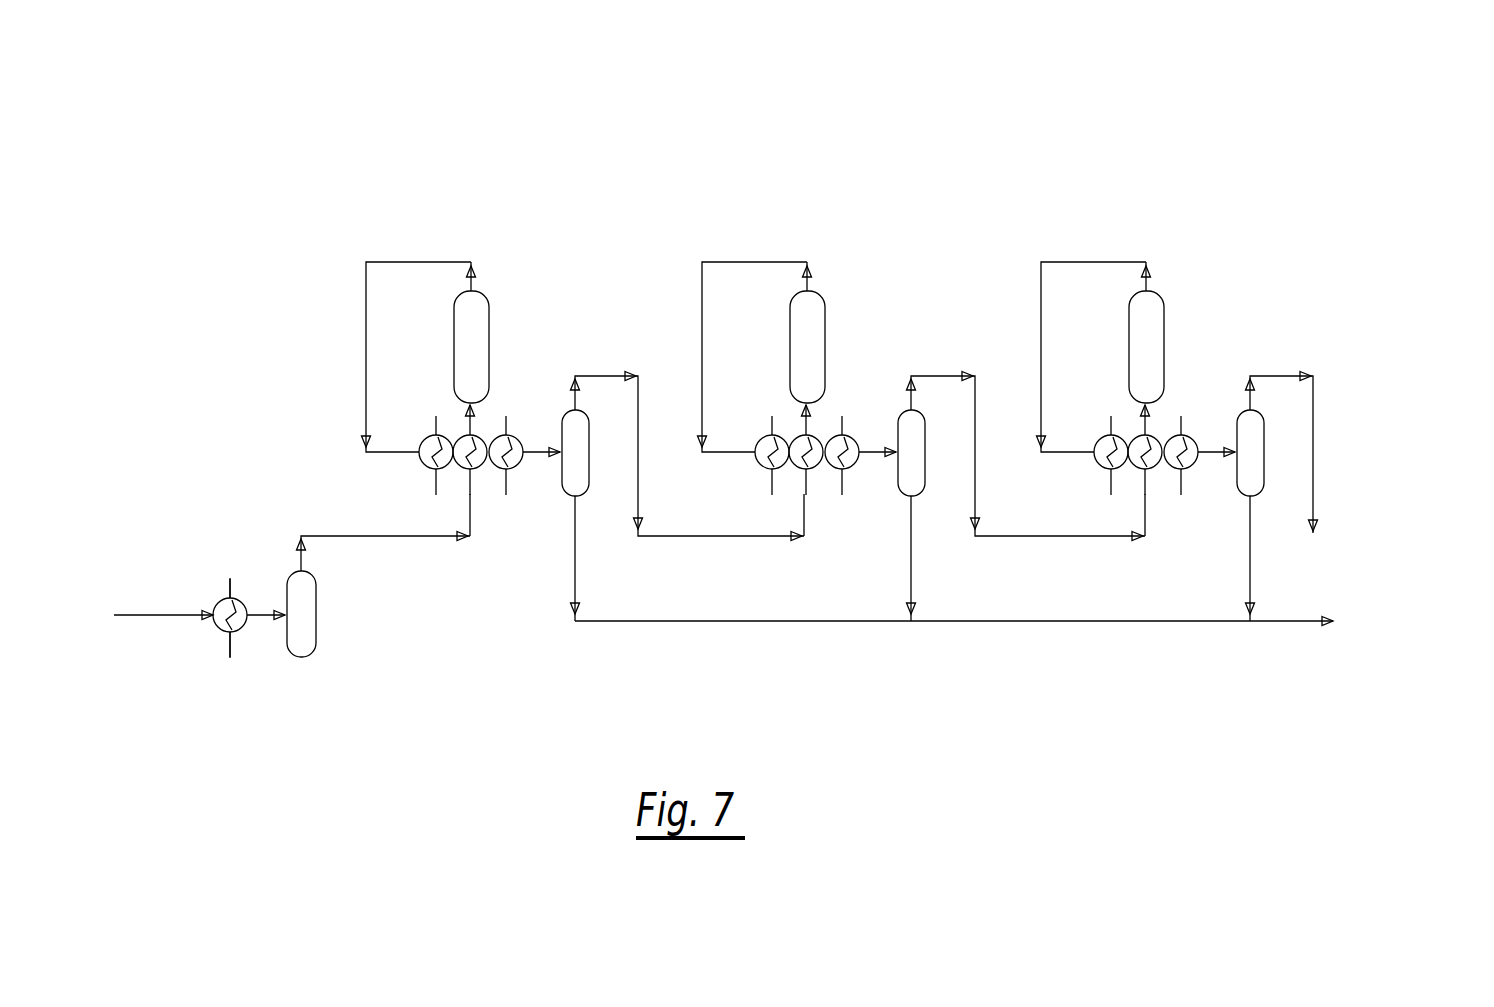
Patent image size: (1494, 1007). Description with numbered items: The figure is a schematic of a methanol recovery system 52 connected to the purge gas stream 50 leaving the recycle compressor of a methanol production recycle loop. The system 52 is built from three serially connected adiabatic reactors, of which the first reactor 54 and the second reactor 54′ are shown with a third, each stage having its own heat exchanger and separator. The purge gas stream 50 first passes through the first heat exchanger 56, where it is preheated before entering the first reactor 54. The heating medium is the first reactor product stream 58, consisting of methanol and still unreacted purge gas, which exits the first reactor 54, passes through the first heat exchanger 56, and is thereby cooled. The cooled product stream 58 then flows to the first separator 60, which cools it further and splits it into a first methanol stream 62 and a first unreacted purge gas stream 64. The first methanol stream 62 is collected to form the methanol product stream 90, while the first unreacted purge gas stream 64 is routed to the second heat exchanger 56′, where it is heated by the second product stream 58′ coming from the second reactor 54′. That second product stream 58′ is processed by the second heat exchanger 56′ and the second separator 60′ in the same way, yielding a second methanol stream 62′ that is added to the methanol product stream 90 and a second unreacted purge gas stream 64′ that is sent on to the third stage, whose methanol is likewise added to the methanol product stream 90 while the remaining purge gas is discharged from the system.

The purge gas stream 50 is at (383, 545).
The methanol recovery system 52 is at (910, 143).
The first reactor 54 is at (500, 312).
The second reactor 54′ is at (832, 315).
The first heat exchanger 56 is at (504, 408).
The second heat exchanger 56′ is at (825, 450).
The first reactor product stream 58 is at (366, 338).
The second product stream 58′ is at (703, 330).
The first separator 60 is at (560, 474).
The second separator 60′ is at (894, 471).
The first methanol stream 62 is at (573, 572).
The second methanol stream 62′ is at (905, 565).
The first unreacted purge gas stream 64 is at (600, 375).
The second unreacted purge gas stream 64′ is at (943, 372).
The methanol product stream 90 is at (1078, 622).